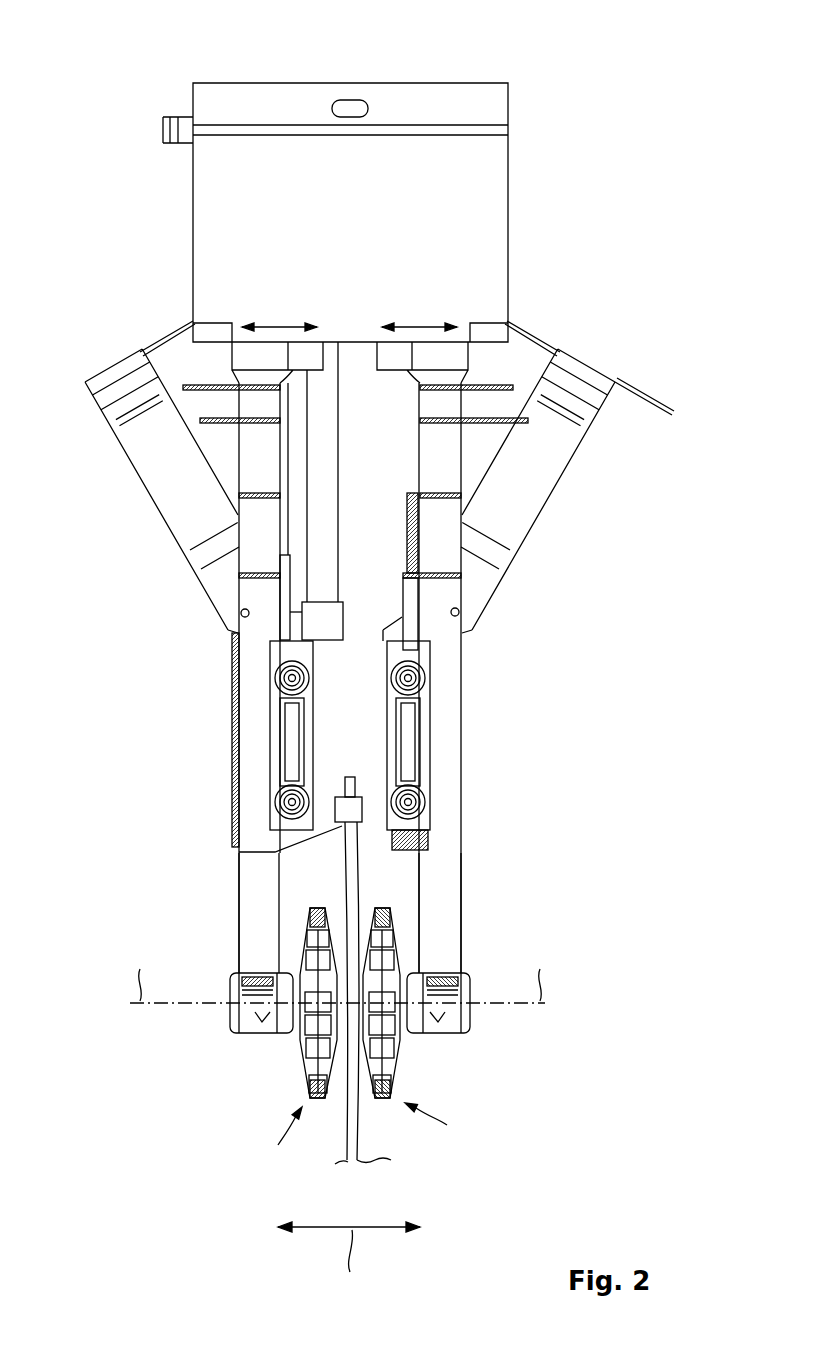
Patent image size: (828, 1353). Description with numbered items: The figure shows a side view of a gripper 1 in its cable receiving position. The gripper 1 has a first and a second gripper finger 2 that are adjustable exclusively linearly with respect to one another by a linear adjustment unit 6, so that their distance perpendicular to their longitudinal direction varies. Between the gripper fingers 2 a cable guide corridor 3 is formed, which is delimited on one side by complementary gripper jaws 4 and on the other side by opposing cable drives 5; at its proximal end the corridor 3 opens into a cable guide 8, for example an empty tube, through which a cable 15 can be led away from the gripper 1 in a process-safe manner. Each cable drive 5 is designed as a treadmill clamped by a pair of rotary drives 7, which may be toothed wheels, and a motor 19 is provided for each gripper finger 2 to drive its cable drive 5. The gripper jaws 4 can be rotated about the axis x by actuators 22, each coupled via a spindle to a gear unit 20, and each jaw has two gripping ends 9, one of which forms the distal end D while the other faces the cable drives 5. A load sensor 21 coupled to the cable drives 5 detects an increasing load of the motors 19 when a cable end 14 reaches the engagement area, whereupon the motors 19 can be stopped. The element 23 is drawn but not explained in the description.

The gripper 1 is at (544, 60).
The gripper finger 2 is at (258, 903).
The cable guide corridor 3 is at (369, 1114).
The gripper jaw 4 is at (302, 1050).
The cable drive 5 is at (275, 726).
The linear adjustment unit 6 is at (476, 215).
The rotary drive 7 is at (292, 678).
The cable guide 8 is at (318, 533).
The gripping end 9 is at (317, 908).
The cable end 14 is at (350, 777).
The cable 15 is at (272, 851).
The motor 19 is at (160, 464).
The gear unit 20 is at (230, 1018).
The load sensor 21 is at (407, 600).
The actuator 22 is at (440, 437).
The bracket 23 is at (272, 652).